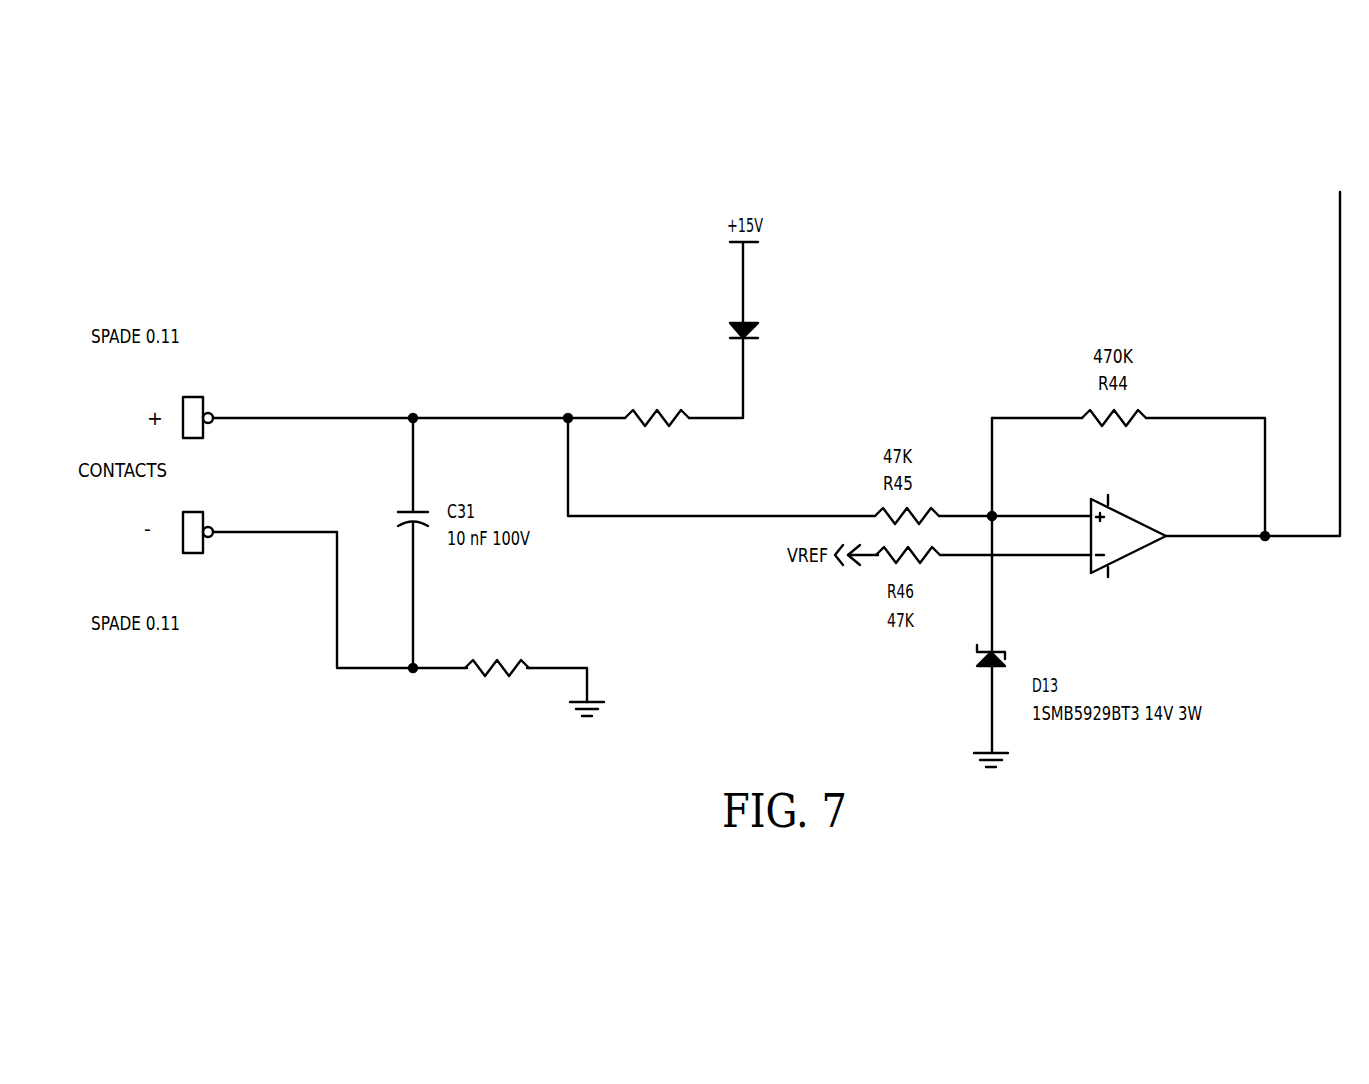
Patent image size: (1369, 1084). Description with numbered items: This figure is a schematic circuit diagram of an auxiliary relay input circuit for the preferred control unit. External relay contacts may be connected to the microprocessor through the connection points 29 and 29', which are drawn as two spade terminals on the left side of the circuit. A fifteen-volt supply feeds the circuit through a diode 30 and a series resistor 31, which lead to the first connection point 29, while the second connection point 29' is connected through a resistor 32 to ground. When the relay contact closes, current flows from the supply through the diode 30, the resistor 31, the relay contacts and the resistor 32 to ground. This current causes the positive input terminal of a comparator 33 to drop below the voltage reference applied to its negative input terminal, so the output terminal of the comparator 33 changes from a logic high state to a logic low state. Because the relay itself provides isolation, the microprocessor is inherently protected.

The connection point 29 is at (285, 381).
The connection point 29' is at (275, 528).
The diode 30 is at (857, 309).
The resistor 31 is at (618, 329).
The resistor 32 is at (567, 658).
The comparator 33 is at (1189, 526).